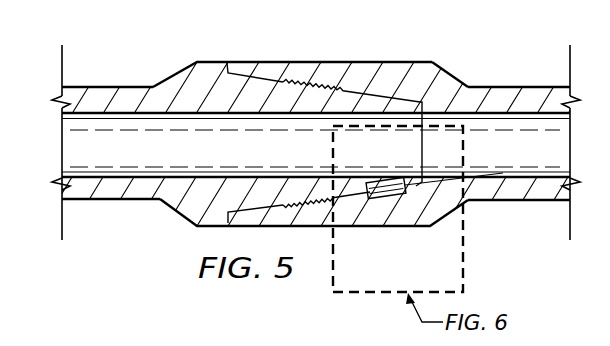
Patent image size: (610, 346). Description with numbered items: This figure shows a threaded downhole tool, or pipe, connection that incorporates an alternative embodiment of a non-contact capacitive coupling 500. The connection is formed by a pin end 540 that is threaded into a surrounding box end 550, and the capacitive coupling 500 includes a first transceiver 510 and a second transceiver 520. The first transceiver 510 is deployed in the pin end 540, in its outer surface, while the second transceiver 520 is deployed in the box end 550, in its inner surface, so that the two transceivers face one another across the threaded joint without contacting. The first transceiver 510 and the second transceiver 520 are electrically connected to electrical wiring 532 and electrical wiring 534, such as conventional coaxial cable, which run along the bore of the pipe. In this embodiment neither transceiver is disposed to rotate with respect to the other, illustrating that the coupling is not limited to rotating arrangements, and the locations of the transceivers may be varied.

The capacitive coupling 500 is at (404, 236).
The first transceiver 510 is at (388, 178).
The second transceiver 520 is at (381, 203).
The electrical wiring 532 is at (115, 178).
The electrical wiring 534 is at (532, 187).
The pin end 540 is at (203, 60).
The box end 550 is at (330, 60).